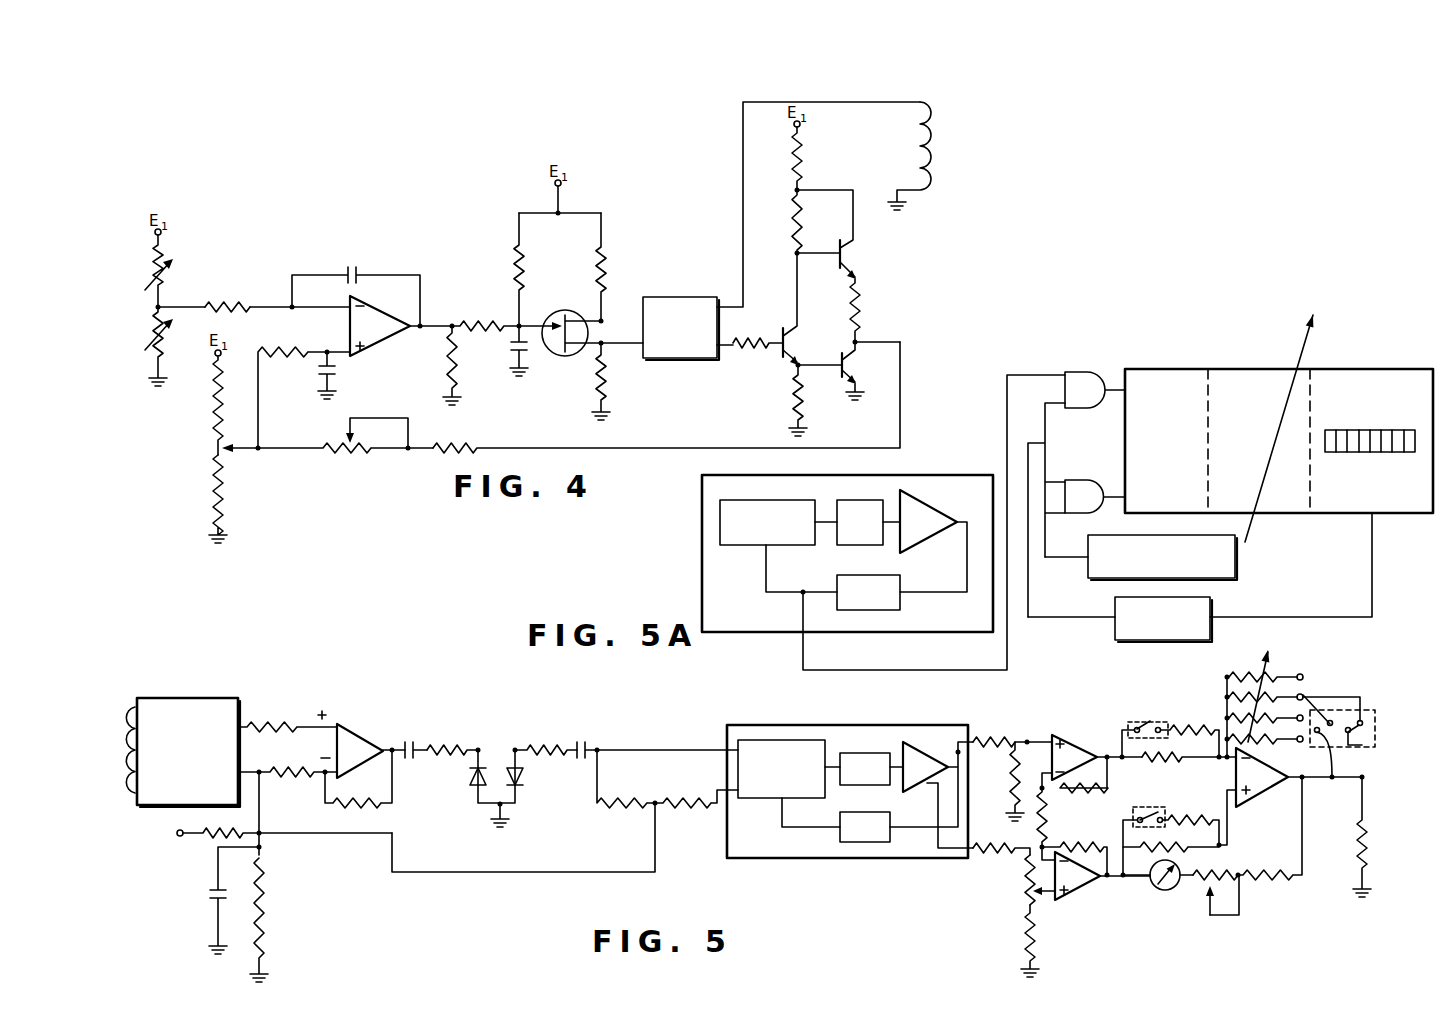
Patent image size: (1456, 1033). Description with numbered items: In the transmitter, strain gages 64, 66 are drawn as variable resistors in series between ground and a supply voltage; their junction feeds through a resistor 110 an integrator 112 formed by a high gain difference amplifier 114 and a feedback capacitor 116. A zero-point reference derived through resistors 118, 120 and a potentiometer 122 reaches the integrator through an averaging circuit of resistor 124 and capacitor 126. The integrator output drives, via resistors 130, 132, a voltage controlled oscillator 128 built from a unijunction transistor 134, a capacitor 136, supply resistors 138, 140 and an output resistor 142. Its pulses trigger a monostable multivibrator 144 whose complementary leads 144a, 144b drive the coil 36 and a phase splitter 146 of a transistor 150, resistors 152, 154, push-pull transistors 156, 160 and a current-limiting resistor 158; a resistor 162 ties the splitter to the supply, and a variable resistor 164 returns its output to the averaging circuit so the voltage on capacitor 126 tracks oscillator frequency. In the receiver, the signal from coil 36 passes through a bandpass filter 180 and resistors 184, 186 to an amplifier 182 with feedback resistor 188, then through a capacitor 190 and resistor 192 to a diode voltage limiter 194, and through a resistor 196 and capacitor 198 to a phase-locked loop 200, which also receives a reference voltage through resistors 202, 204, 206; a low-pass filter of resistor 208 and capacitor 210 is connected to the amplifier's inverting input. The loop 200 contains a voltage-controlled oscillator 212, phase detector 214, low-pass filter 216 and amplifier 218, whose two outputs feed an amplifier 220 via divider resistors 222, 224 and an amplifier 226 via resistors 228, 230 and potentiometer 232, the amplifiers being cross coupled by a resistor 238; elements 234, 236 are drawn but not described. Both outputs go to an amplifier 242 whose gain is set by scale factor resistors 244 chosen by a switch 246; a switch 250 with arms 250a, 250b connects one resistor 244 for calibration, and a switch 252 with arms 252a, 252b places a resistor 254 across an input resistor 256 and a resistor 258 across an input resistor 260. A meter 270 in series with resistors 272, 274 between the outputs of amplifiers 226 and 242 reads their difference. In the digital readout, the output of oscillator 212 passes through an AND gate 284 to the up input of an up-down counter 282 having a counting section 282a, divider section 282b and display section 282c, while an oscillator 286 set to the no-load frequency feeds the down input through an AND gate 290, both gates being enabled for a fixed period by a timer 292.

In FIG. 4, the coil 36 is at (920, 140).
In FIG. 5, the coil 36 is at (118, 705).
In FIG. 4, the strain gage 64 is at (157, 268).
In FIG. 4, the strain gage 66 is at (157, 330).
In FIG. 4, the resistor 110 is at (216, 305).
In FIG. 4, the integrator 112 is at (411, 295).
In FIG. 4, the high gain difference amplifier 114 is at (412, 332).
In FIG. 4, the feedback capacitor 116 is at (352, 265).
In FIG. 4, the resistor 118 is at (213, 393).
In FIG. 4, the resistor 120 is at (212, 498).
In FIG. 4, the potentiometer 122 is at (230, 448).
In FIG. 4, the resistor 124 is at (303, 355).
In FIG. 4, the capacitor 126 is at (337, 369).
In FIG. 4, the voltage controlled oscillator 128 is at (570, 293).
In FIG. 4, the resistor 130 is at (448, 382).
In FIG. 4, the resistor 132 is at (482, 320).
In FIG. 4, the unijunction transistor 134 is at (560, 357).
In FIG. 4, the capacitor 136 is at (512, 352).
In FIG. 4, the supply resistor 138 is at (514, 255).
In FIG. 4, the supply resistor 140 is at (612, 262).
In FIG. 4, the output resistor 142 is at (612, 373).
In FIG. 4, the monostable multivibrator 144 is at (680, 297).
In FIG. 4, the output lead 144a is at (743, 265).
In FIG. 4, the output lead 144b is at (717, 348).
In FIG. 4, the phase splitter 146 is at (833, 303).
In FIG. 4, the transistor 150 is at (778, 350).
In FIG. 4, the resistor 152 is at (793, 390).
In FIG. 4, the resistor 154 is at (803, 230).
In FIG. 4, the transistor 156 is at (858, 362).
In FIG. 4, the current-limiting resistor 158 is at (858, 303).
In FIG. 4, the transistor 160 is at (856, 255).
In FIG. 4, the resistor 162 is at (805, 158).
In FIG. 4, the variable resistor 164 is at (350, 453).
In FIG. 5, the bandpass filter 180 is at (189, 698).
In FIG. 5, the amplifier 182 is at (368, 736).
In FIG. 5, the resistor 184 is at (293, 718).
In FIG. 5, the resistor 186 is at (298, 782).
In FIG. 5, the feedback resistor 188 is at (380, 806).
In FIG. 5, the capacitor 190 is at (411, 740).
In FIG. 5, the resistor 192 is at (445, 745).
In FIG. 5, the voltage limiter 194 is at (498, 792).
In FIG. 5, the resistor 196 is at (550, 742).
In FIG. 5, the capacitor 198 is at (592, 742).
In FIG. 5A, the phase-locked loop 200 is at (752, 614).
In FIG. 5, the phase-locked loop 200 is at (775, 851).
In FIG. 5, the resistor 202 is at (642, 800).
In FIG. 5, the resistor 204 is at (700, 802).
In FIG. 5, the resistor 206 is at (198, 838).
In FIG. 5, the resistor 208 is at (280, 903).
In FIG. 5, the capacitor 210 is at (215, 898).
In FIG. 5A, the voltage-controlled oscillator 212 is at (860, 575).
In FIG. 5, the voltage-controlled oscillator 212 is at (867, 842).
In FIG. 5A, the phase detector 214 is at (762, 500).
In FIG. 5, the phase detector 214 is at (760, 740).
In FIG. 5A, the low-pass filter 216 is at (873, 500).
In FIG. 5, the low-pass filter 216 is at (856, 753).
In FIG. 5A, the amplifier 218 is at (934, 530).
In FIG. 5, the amplifier 218 is at (932, 775).
In FIG. 5, the amplifier 220 is at (1055, 737).
In FIG. 5, the voltage divider resistor 222 is at (990, 738).
In FIG. 5, the voltage divider resistor 224 is at (1012, 797).
In FIG. 5, the amplifier 226 is at (1077, 898).
In FIG. 5, the resistor 228 is at (1012, 845).
In FIG. 5, the resistor 230 is at (1024, 935).
In FIG. 5, the potentiometer 232 is at (1024, 890).
In FIG. 5, the resistor 234 is at (1095, 793).
In FIG. 5, the feedback resistor 236 is at (1107, 878).
In FIG. 5, the resistor 238 is at (1047, 818).
In FIG. 5, the amplifier 242 is at (1234, 788).
In FIG. 5, the scale factor resistors 244 is at (1264, 690).
In FIG. 5, the switch 246 is at (1307, 687).
In FIG. 5, the double-pole double throw switch 250 is at (1376, 727).
In FIG. 5, the normally open arm 250a is at (1324, 736).
In FIG. 5, the normally closed arm 250b is at (1355, 727).
In FIG. 5, the double pole double throw switch 252 is at (1152, 722).
In FIG. 5, the normally open arm 252a is at (1148, 722).
In FIG. 5, the normally open arm 252b is at (1128, 724).
In FIG. 5, the resistor 254 is at (1200, 725).
In FIG. 5, the input resistor 256 is at (1160, 762).
In FIG. 5, the resistor 258 is at (1226, 822).
In FIG. 5, the input resistor 260 is at (1182, 870).
In FIG. 5, the meter 270 is at (1165, 892).
In FIG. 5, the resistor 272 is at (1268, 882).
In FIG. 5, the resistor 274 is at (1216, 918).
In FIG. 5A, the up-down counter 282 is at (1345, 310).
In FIG. 5A, the counting section 282a is at (1150, 369).
In FIG. 5A, the divider section 282b is at (1250, 369).
In FIG. 5A, the display section 282c is at (1356, 369).
In FIG. 5A, the AND gate 284 is at (1098, 372).
In FIG. 5A, the oscillator 286 is at (1235, 557).
In FIG. 5A, the AND gate 290 is at (1102, 480).
In FIG. 5A, the timer 292 is at (1212, 607).